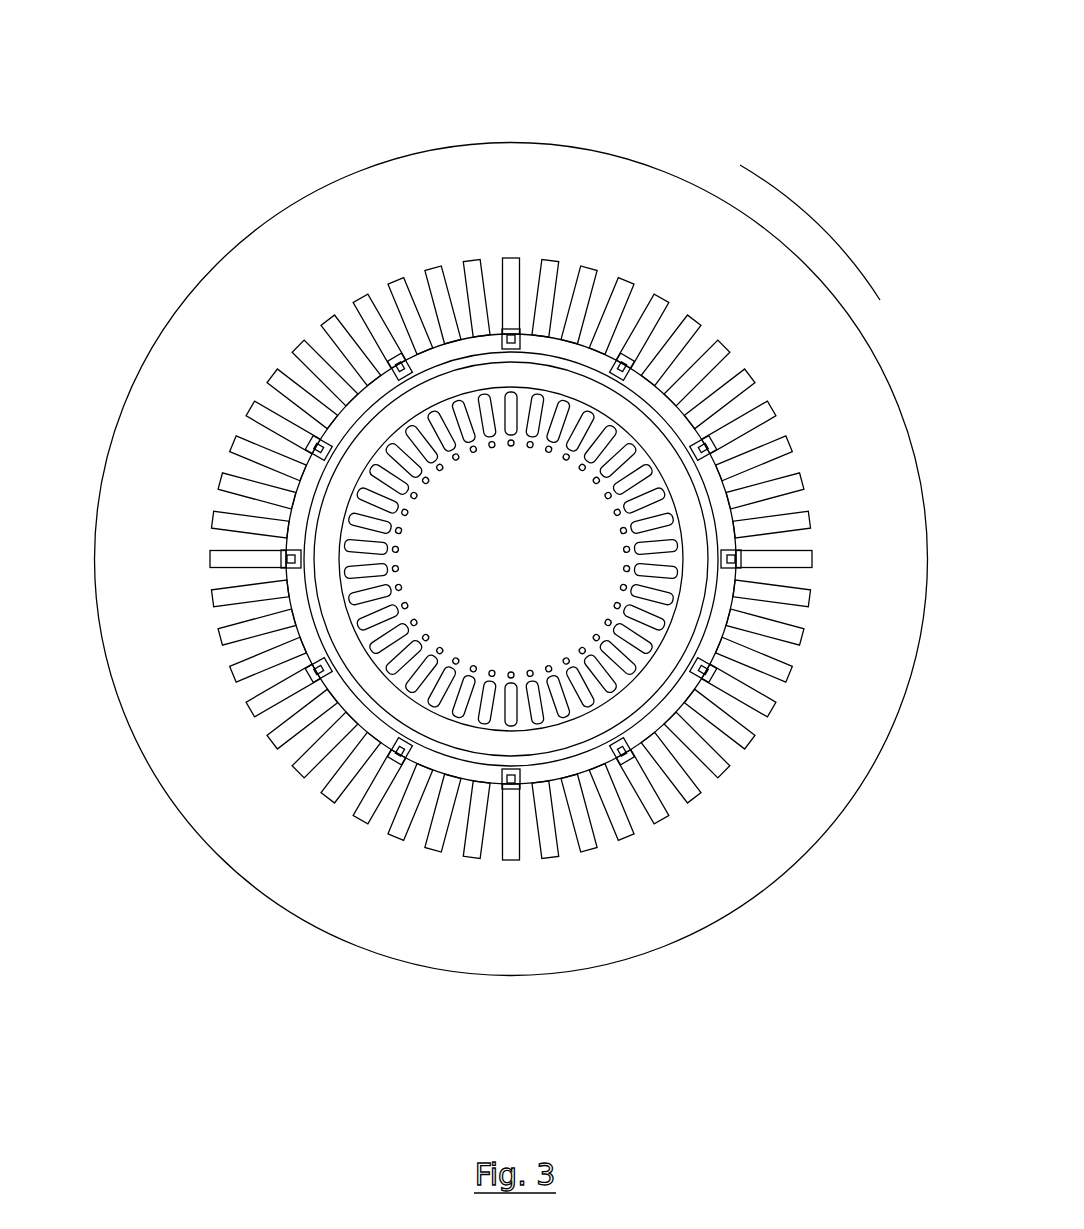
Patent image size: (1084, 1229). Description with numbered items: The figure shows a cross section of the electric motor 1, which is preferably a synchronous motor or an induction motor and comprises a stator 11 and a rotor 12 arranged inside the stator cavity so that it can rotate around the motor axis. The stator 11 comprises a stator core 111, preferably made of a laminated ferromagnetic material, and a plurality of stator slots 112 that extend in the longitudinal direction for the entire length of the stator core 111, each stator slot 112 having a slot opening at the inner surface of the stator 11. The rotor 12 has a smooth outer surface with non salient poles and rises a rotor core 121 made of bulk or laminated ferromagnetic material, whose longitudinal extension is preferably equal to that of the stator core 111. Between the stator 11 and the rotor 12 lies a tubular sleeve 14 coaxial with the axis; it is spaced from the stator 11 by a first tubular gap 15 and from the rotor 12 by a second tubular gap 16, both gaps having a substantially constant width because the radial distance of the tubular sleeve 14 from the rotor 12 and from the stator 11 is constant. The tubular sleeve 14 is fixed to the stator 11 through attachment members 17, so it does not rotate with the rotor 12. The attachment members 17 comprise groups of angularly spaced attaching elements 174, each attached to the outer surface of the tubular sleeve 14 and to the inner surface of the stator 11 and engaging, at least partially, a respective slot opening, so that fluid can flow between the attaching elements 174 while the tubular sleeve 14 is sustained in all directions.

The electric motor 1 is at (772, 116).
The stator 11 is at (298, 873).
The stator core 111 is at (808, 318).
The stator slots 112 is at (697, 798).
The rotor 12 is at (440, 605).
The rotor core 121 is at (552, 567).
The tubular sleeve 14 is at (365, 414).
The first tubular gap 15 is at (433, 357).
The second tubular gap 16 is at (552, 377).
The attachment members 17 is at (510, 795).
The attaching elements 174 is at (710, 672).